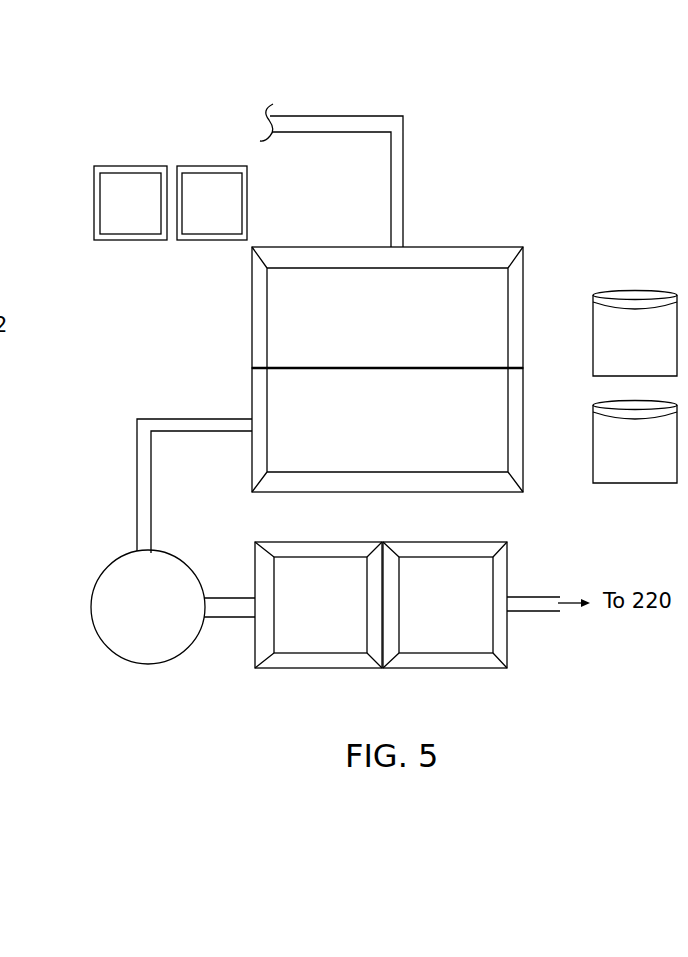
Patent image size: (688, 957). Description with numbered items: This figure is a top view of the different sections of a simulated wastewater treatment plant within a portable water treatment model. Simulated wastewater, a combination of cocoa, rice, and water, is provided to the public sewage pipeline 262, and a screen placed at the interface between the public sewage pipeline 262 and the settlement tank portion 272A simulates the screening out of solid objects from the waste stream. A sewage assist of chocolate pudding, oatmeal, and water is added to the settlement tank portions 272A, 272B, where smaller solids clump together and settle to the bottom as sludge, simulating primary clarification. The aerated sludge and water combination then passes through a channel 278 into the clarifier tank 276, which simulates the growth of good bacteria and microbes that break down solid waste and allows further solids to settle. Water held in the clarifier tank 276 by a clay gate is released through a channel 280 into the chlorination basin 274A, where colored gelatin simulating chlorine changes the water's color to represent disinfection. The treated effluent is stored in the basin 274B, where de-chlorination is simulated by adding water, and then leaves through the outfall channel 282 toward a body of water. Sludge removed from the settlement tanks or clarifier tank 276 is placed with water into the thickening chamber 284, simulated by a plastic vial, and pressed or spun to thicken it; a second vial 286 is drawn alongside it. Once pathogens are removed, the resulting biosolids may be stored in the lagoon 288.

The public sewage pipeline 262 is at (350, 115).
The lagoon 288 is at (213, 165).
The settlement tank portion 272A is at (360, 336).
The settlement tank portion 272B is at (360, 436).
The channel 278 is at (175, 417).
The clarifier tank 276 is at (169, 621).
The channel 280 is at (231, 617).
The chlorination basin 274A is at (293, 619).
The basin 274B is at (417, 619).
The outfall channel 282 is at (538, 594).
The thickening chamber 284 is at (615, 360).
The chemical container 286 is at (615, 469).